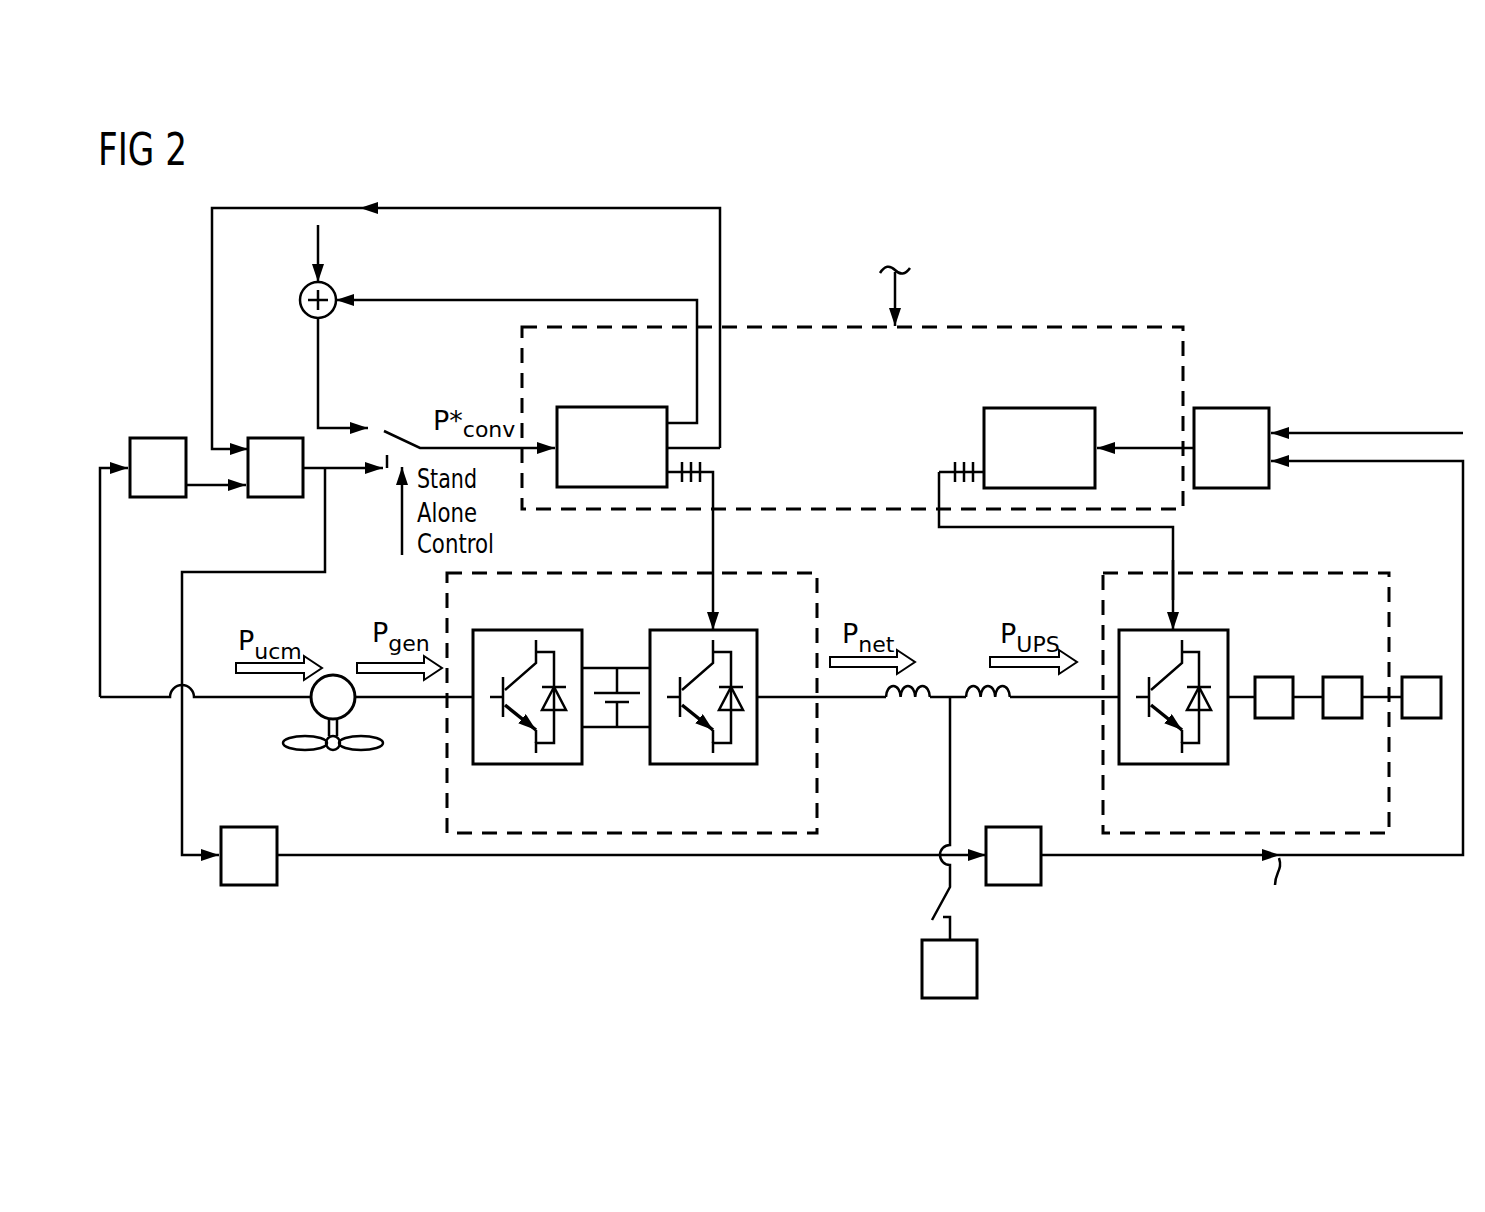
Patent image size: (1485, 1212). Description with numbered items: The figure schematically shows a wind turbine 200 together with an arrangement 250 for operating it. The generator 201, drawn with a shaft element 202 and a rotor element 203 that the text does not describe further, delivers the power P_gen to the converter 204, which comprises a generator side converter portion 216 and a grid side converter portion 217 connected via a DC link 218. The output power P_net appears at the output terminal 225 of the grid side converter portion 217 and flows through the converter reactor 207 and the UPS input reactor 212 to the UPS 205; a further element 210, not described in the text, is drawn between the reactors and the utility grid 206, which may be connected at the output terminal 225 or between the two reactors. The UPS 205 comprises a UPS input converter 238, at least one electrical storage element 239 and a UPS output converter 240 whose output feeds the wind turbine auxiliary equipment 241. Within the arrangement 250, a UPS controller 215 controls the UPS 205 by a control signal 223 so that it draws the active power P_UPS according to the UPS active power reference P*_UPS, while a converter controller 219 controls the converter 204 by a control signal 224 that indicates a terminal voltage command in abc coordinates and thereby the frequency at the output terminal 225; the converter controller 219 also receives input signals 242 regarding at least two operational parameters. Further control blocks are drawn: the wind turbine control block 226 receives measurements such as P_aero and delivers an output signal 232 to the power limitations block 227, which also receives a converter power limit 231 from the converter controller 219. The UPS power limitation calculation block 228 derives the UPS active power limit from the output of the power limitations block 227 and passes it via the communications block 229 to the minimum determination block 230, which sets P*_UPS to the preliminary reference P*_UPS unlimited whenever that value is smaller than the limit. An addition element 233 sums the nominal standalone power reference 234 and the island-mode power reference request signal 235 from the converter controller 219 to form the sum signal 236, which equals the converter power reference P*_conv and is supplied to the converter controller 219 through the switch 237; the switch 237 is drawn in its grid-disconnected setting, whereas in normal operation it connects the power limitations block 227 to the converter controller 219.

The wind turbine 200 is at (1387, 197).
The generator 201 is at (334, 674).
The shaft 202 is at (325, 735).
The rotor 203 is at (360, 752).
The converter 204 is at (819, 597).
The UPS 205 is at (1343, 572).
The utility grid 206 is at (978, 968).
The converter reactor 207 is at (898, 700).
The grid switch 210 is at (940, 900).
The UPS input reactor 212 is at (1000, 700).
The UPS controller 215 is at (1040, 406).
The generator side converter portion 216 is at (528, 766).
The grid side converter portion 217 is at (706, 766).
The DC link 218 is at (617, 740).
The converter controller 219 is at (612, 405).
The control signal 223 is at (1176, 628).
The control signal 224 is at (716, 628).
The output terminal 225 is at (762, 700).
The wind turbine control block 226 is at (160, 436).
The power limitations block 227 is at (276, 436).
The UPS power limitation calculation block 228 is at (248, 825).
The communications block 229 is at (1015, 825).
The minimum determination block 230 is at (1232, 406).
The converter power limit 231 is at (355, 205).
The output signal 232 is at (245, 488).
The addition element 233 is at (300, 302).
The nominal value for power reference during off-grid standalone operation 234 is at (313, 280).
The converter-island-mode power reference request signal 235 is at (365, 283).
The sum signal 236 is at (368, 425).
The switch 237 is at (397, 430).
The UPS input converter 238 is at (1175, 766).
The electrical storage element 239 is at (1275, 675).
The UPS output converter 240 is at (1345, 675).
The wind turbine auxiliary equipment 241 is at (1425, 675).
The input signals 242 is at (893, 318).
The arrangement 250 is at (1043, 326).